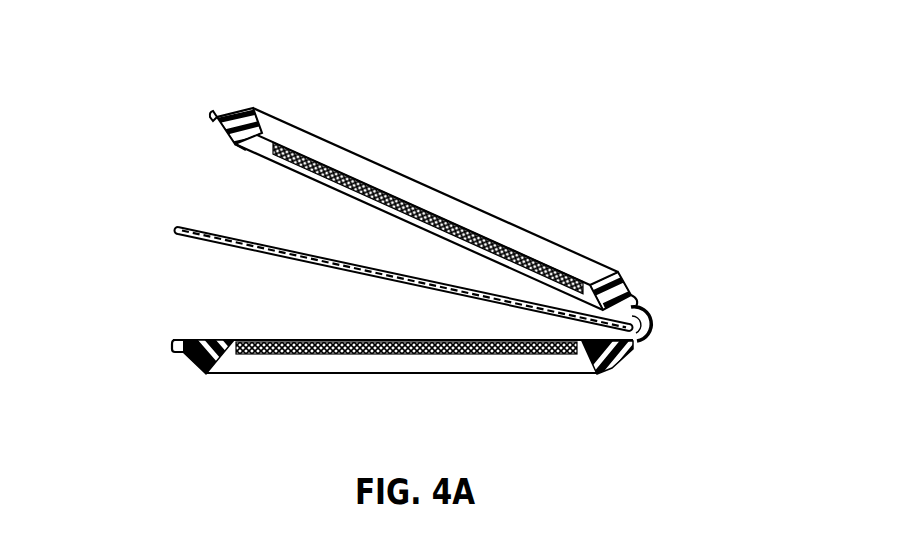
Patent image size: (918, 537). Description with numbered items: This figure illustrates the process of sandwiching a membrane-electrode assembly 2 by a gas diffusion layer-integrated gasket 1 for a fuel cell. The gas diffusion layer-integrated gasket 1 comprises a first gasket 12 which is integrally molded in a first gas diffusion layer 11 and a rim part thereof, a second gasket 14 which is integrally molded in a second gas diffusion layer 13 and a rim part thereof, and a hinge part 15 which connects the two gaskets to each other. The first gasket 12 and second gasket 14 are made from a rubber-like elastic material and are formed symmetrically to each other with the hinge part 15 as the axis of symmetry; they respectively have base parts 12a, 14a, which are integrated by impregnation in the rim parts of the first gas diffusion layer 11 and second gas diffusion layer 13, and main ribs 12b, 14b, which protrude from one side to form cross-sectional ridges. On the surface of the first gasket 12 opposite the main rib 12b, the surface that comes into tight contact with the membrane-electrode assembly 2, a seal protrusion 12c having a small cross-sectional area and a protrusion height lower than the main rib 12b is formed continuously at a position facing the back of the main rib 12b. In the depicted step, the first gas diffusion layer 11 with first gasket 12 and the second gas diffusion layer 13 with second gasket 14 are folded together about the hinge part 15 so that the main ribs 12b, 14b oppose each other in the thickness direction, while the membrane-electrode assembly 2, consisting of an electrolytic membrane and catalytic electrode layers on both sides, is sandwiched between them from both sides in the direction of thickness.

The gas diffusion layer-integrated gasket 1 is at (395, 237).
The membrane-electrode assembly 2 is at (156, 222).
The first gas diffusion layer 11 is at (395, 195).
The first gasket 12 is at (366, 164).
The base part 12a is at (216, 116).
The main rib 12b is at (251, 107).
The seal protrusion 12c is at (236, 146).
The second gas diffusion layer 13 is at (407, 356).
The second gasket 14 is at (343, 392).
The base part 14a is at (172, 346).
The main rib 14b is at (206, 375).
The hinge part 15 is at (654, 337).